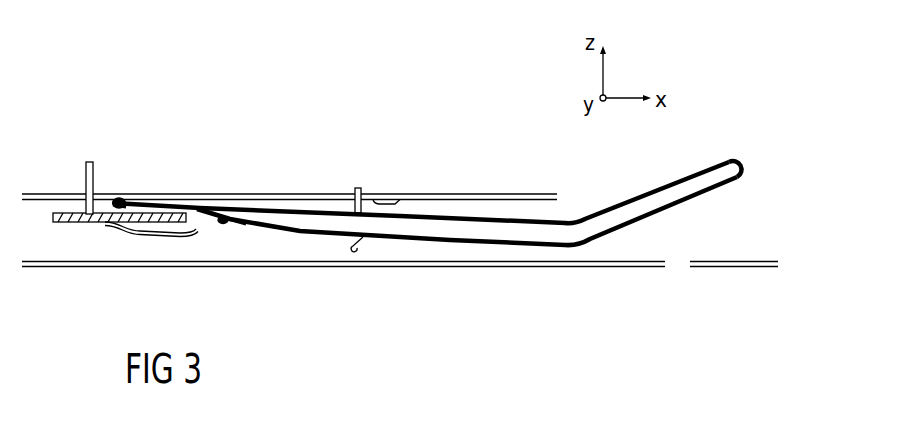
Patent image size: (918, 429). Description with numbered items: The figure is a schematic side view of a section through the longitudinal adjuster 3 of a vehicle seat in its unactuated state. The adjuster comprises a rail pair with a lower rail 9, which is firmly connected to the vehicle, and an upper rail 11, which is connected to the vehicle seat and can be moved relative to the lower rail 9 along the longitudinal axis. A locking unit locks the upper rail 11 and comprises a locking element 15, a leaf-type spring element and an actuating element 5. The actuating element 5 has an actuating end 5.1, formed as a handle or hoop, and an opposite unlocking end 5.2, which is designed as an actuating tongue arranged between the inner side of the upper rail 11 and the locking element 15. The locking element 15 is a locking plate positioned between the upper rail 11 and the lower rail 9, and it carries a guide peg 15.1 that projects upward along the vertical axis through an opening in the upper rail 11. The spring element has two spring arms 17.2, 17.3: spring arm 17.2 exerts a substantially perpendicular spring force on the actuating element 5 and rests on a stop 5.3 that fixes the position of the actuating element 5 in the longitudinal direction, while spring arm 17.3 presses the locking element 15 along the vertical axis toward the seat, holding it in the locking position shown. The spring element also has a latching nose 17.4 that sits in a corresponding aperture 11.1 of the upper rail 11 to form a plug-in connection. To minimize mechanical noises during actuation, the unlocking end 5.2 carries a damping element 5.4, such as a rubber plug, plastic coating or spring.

The longitudinal adjuster 3 is at (227, 94).
The actuating element 5 is at (586, 228).
The actuating end 5.1 is at (709, 164).
The unlocking end 5.2 is at (123, 205).
The stop 5.3 is at (220, 224).
The damping element 5.4 is at (117, 204).
The lower rail 9 is at (565, 269).
The upper rail 11 is at (285, 194).
The aperture 11.1 is at (369, 192).
The locking element 15 is at (104, 223).
The guide peg 15.1 is at (87, 162).
The spring arm 17.2 is at (234, 225).
The spring arm 17.3 is at (161, 237).
The latching nose 17.4 is at (357, 184).